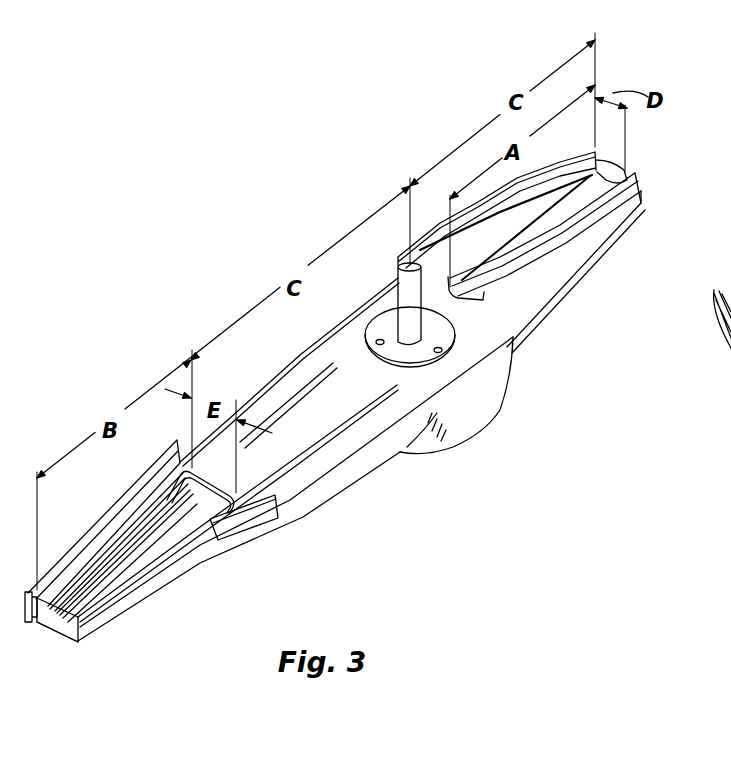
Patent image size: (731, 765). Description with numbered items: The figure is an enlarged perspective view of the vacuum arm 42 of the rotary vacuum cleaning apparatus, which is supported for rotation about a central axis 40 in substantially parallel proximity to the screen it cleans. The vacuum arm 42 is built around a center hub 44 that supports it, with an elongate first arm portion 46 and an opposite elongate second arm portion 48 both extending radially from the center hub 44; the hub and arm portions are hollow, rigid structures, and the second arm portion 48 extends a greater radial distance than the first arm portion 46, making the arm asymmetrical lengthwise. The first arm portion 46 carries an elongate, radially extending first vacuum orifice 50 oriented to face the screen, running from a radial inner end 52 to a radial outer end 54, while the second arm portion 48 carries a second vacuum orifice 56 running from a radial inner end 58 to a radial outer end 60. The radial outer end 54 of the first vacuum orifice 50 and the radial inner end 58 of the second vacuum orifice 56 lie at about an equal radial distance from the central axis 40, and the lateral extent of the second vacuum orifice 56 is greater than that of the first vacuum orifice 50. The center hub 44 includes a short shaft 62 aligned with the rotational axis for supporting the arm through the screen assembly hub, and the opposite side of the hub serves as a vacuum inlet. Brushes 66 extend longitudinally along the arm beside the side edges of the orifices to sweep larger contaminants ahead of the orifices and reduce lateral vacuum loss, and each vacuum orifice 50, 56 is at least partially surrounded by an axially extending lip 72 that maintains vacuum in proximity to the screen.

The central axis 40 is at (397, 236).
The vacuum arm 42 is at (567, 307).
The center hub 44 is at (453, 430).
The first arm portion 46 is at (642, 197).
The second arm portion 48 is at (95, 640).
The first vacuum orifice 50 is at (522, 250).
The radial inner end 52 is at (480, 283).
The radial outer end 54 is at (608, 167).
The second vacuum orifice 56 is at (163, 523).
The radial inner end 58 is at (223, 483).
The radial outer end 60 is at (40, 622).
The short shaft 62 is at (393, 300).
The brushes 66 is at (82, 531).
The lip 72 is at (267, 547).